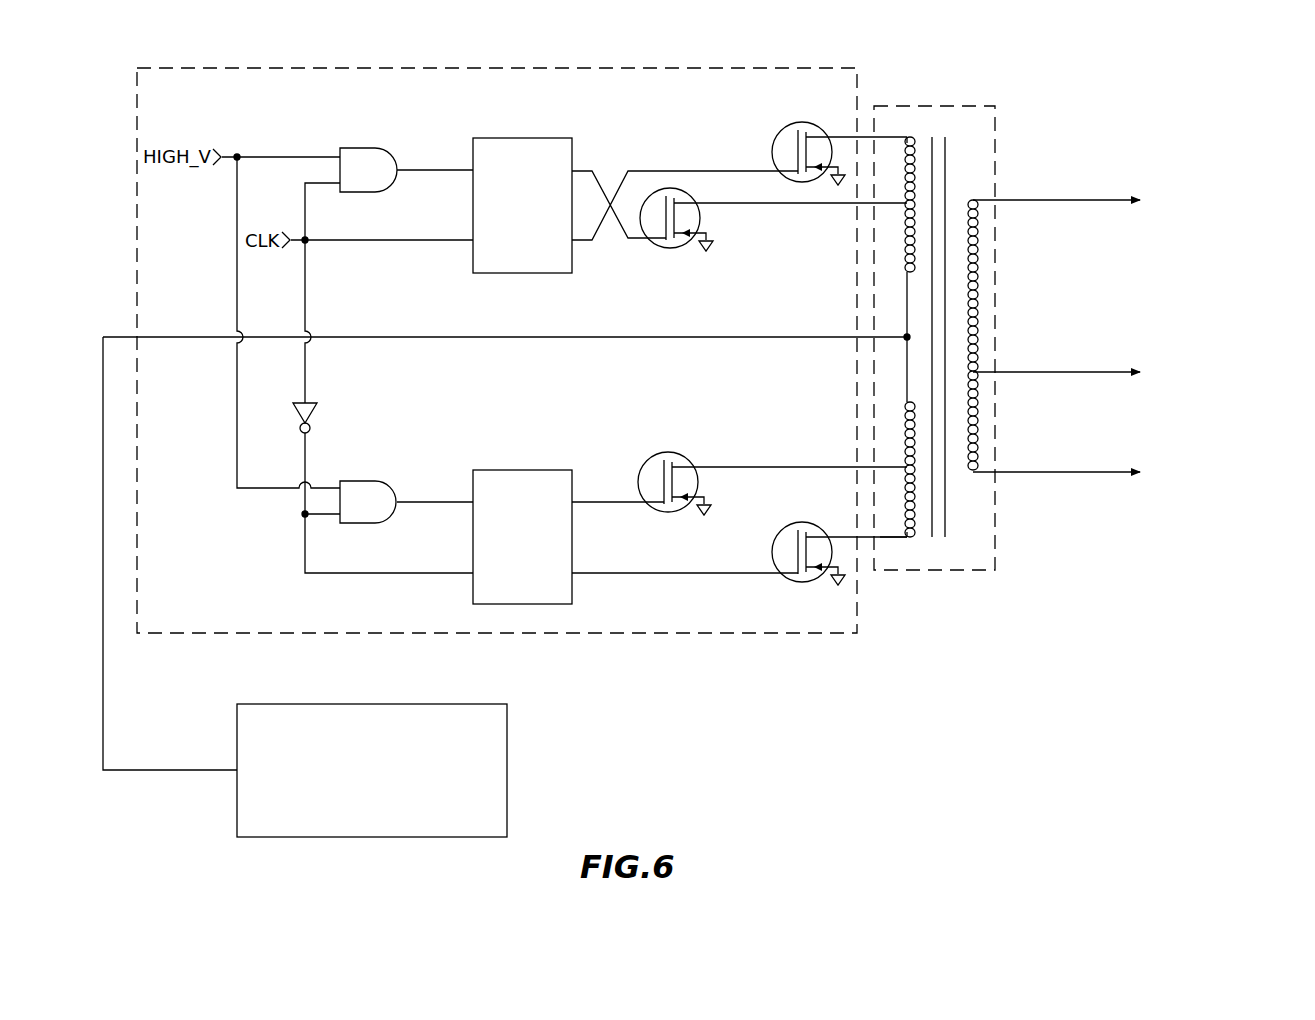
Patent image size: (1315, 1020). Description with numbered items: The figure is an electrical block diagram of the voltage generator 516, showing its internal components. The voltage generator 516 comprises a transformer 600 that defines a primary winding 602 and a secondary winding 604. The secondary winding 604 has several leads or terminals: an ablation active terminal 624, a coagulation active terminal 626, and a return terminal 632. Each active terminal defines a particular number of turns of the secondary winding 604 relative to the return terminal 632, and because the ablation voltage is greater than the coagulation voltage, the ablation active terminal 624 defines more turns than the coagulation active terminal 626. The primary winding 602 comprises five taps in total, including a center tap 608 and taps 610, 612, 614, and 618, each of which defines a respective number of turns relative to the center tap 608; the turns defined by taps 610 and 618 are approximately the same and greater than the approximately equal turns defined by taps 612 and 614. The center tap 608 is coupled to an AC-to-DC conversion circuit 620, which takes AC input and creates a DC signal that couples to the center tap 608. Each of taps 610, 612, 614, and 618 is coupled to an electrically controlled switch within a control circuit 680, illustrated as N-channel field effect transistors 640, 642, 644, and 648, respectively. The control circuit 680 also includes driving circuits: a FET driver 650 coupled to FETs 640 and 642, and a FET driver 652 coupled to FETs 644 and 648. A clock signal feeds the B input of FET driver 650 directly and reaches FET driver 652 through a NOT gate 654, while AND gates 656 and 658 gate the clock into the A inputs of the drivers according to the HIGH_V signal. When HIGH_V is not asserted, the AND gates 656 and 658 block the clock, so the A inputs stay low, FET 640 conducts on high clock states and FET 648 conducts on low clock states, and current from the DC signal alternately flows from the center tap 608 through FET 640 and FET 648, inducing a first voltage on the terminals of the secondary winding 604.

The voltage generator 516 is at (762, 757).
The transformer 600 is at (946, 103).
The primary winding 602 is at (900, 102).
The secondary winding 604 is at (978, 192).
The center tap 608 is at (905, 335).
The tap 610 is at (888, 137).
The tap 612 is at (868, 205).
The tap 614 is at (890, 465).
The tap 618 is at (886, 539).
The AC-to-DC conversion circuit 620 is at (372, 770).
The ablation active terminal 624 is at (1080, 200).
The coagulation active terminal 626 is at (1078, 372).
The return terminal 632 is at (1073, 472).
The field effect transistor 640 is at (780, 132).
The field effect transistor 642 is at (664, 250).
The field effect transistor 644 is at (652, 461).
The field effect transistor 648 is at (775, 541).
The FET driver 650 is at (627, 205).
The FET driver 652 is at (627, 537).
The NOT gate 654 is at (320, 412).
The AND gate 656 is at (383, 148).
The AND gate 658 is at (382, 481).
The control circuit 680 is at (612, 68).